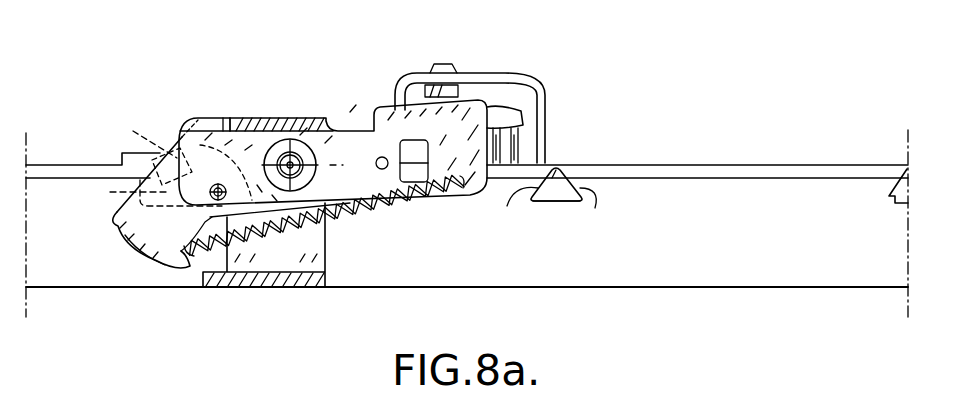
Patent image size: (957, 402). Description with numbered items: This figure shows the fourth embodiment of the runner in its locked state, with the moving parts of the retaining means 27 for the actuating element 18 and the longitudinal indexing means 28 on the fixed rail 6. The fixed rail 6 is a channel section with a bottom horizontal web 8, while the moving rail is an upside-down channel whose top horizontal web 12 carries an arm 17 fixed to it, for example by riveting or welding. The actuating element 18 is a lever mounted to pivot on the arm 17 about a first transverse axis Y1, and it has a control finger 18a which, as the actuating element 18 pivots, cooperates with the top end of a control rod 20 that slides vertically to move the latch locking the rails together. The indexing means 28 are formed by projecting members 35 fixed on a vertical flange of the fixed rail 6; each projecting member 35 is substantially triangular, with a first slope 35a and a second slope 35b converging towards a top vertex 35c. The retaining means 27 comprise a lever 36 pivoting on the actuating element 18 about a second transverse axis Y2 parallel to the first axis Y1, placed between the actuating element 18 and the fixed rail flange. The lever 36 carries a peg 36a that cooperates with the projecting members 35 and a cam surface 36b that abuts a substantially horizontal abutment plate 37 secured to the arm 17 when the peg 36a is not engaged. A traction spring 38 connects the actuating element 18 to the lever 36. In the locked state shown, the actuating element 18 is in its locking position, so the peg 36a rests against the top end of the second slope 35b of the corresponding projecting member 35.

The fixed rail 6 is at (729, 246).
The bottom horizontal web 8 is at (590, 288).
The top horizontal web 12 is at (752, 165).
The arm 17 is at (265, 120).
The actuating element 18 is at (357, 147).
The control finger 18a is at (507, 118).
The control rod 20 is at (514, 143).
The retaining means 27 is at (137, 244).
The longitudinal indexing means 28 is at (562, 204).
The projecting member 35 is at (540, 195).
The first slope 35a is at (301, 210).
The second slope 35b is at (228, 99).
The top vertex 35c is at (548, 186).
The lever 36 is at (170, 247).
The peg 36a is at (192, 133).
The cam surface 36b is at (152, 250).
The abutment plate 37 is at (310, 283).
The traction spring 38 is at (373, 216).
The first transverse axis Y1 is at (288, 160).
The second transverse axis Y2 is at (221, 199).